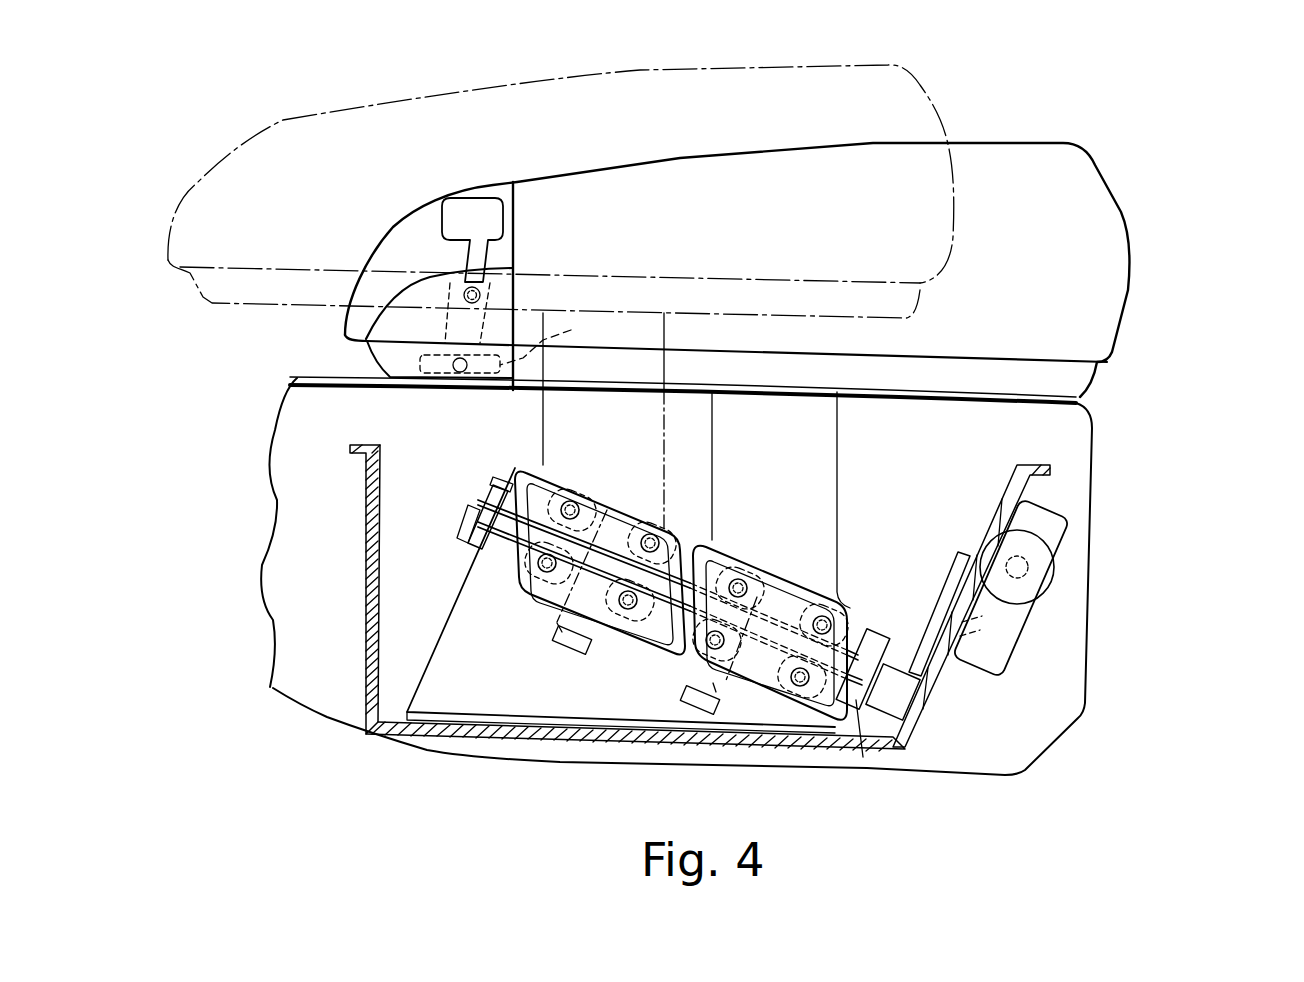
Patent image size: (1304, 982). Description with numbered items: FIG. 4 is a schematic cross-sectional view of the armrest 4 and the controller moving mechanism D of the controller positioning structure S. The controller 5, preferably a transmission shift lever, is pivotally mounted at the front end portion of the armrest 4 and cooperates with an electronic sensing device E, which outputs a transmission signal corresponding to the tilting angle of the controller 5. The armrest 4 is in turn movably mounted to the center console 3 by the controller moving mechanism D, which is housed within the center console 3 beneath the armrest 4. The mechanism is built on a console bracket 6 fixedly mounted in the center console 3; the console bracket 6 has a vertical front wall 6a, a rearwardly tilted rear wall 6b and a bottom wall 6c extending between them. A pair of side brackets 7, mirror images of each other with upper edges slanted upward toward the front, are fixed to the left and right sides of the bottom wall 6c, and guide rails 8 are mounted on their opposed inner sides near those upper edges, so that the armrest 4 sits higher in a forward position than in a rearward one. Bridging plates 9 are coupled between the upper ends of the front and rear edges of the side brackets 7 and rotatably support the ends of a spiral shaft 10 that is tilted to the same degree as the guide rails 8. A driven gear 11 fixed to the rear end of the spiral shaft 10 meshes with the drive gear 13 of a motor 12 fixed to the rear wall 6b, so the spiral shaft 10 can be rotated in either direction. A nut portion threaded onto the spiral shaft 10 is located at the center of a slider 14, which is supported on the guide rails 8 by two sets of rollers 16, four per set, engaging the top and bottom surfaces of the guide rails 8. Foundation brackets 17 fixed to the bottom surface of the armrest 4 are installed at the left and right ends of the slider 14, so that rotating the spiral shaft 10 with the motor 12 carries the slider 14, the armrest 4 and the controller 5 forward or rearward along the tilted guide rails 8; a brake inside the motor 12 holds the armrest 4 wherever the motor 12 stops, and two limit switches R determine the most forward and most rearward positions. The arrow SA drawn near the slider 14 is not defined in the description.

The center console 3 is at (1087, 660).
The armrest 4 is at (998, 142).
The controller 5 is at (458, 203).
The console bracket 6 is at (667, 630).
The vertical front wall 6a is at (366, 520).
The rearwardly tilted rear wall 6b is at (1003, 485).
The bottom wall 6c is at (663, 746).
The side brackets 7 is at (442, 655).
The guide rails 8 is at (864, 628).
The bridging plates 9 is at (495, 482).
The spiral shaft 10 is at (505, 517).
The driven gear 11 is at (913, 720).
The motor 12 is at (1072, 530).
The drive gear 13 is at (955, 565).
The slider 14 is at (866, 760).
The rollers 16 is at (750, 560).
The foundation brackets 17 is at (828, 460).
The controller positioning structure S is at (1168, 192).
The controller moving mechanism D is at (1020, 438).
The electronic sensing device E is at (543, 339).
The limit switches R is at (553, 630).
The sliding direction SA is at (812, 570).